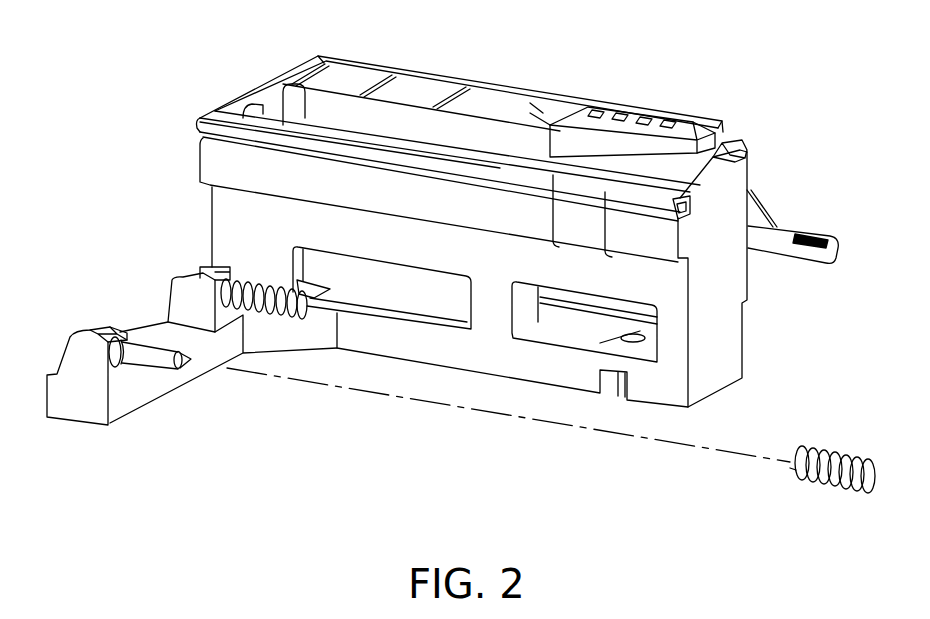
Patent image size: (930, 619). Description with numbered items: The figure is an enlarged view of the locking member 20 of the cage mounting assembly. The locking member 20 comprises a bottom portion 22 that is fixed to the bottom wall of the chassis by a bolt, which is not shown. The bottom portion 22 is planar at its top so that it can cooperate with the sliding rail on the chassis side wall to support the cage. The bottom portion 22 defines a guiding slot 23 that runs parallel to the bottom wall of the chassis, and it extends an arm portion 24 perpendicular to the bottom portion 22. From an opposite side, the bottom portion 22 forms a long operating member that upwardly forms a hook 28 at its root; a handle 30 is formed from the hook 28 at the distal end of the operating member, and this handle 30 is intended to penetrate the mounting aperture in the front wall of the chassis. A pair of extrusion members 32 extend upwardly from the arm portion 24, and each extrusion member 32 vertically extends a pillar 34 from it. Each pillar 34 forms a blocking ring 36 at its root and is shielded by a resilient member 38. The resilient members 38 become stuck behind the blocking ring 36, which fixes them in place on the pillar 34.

The locking member 20 is at (478, 239).
The bottom portion 22 is at (240, 217).
The guiding slot 23 is at (220, 142).
The arm portion 24 is at (157, 333).
The hook 28 is at (733, 153).
The handle 30 is at (790, 230).
The extrusion member 32 is at (87, 403).
The pillar 34 is at (163, 357).
The blocking ring 36 is at (127, 372).
The resilient member 38 is at (827, 453).